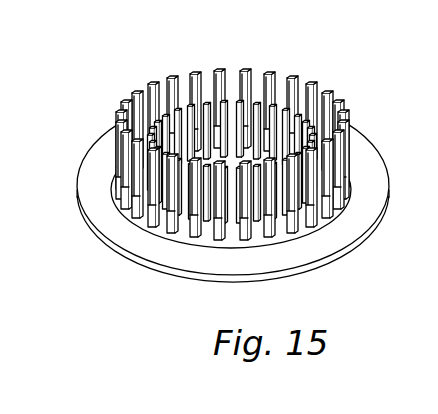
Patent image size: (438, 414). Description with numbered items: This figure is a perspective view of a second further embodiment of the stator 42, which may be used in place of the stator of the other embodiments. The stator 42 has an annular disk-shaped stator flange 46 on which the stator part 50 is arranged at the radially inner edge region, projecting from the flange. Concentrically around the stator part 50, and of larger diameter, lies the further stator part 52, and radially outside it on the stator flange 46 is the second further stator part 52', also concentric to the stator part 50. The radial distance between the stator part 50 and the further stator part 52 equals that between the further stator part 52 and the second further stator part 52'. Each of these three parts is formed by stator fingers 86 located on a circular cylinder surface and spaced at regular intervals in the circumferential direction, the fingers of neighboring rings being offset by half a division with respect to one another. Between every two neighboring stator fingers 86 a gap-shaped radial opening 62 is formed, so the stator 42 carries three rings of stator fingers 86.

The stator 42 is at (113, 102).
The stator flange 46 is at (363, 167).
The stator part 50 is at (197, 128).
The further stator part 52 is at (192, 88).
The second further stator part 52' is at (232, 107).
The radial opening 62 is at (277, 80).
The stator fingers 86 is at (282, 137).